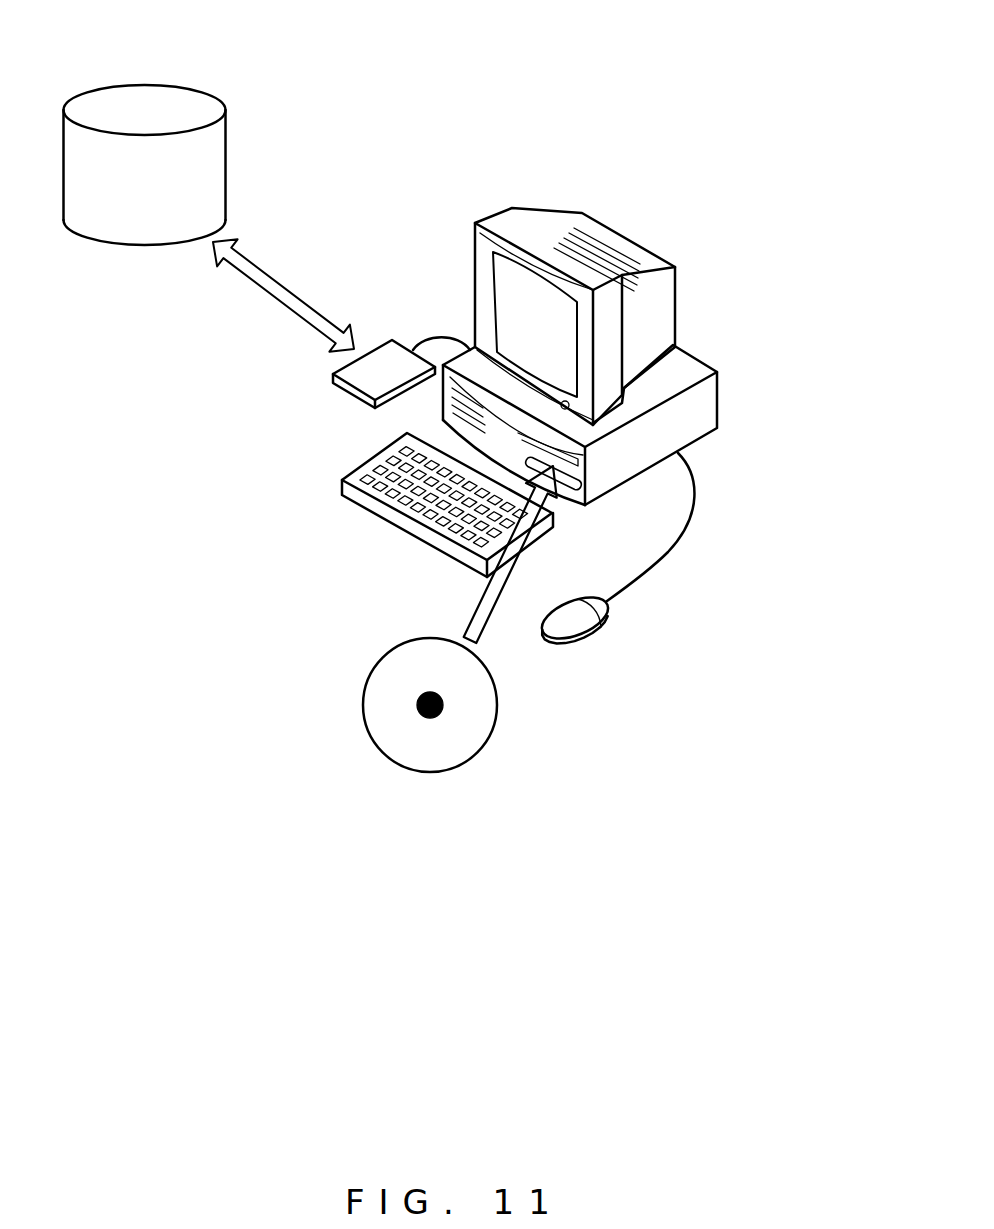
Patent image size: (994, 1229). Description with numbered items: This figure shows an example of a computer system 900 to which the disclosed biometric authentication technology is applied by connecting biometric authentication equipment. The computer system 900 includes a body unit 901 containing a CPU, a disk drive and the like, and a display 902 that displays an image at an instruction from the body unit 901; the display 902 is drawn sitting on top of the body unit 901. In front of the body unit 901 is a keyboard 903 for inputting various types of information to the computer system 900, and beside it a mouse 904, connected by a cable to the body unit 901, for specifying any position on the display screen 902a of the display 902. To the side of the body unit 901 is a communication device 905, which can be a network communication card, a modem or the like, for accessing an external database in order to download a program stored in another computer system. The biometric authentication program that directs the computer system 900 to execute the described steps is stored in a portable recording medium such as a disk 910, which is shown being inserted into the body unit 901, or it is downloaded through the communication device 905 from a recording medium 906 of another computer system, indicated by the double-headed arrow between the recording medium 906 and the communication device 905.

The computer system 900 is at (658, 216).
The body unit 901 is at (718, 407).
The display 902 is at (675, 317).
The display screen 902a is at (495, 307).
The keyboard 903 is at (390, 525).
The mouse 904 is at (598, 637).
The communication device 905 is at (341, 393).
The recording medium 906 is at (223, 152).
The disk 910 is at (497, 728).